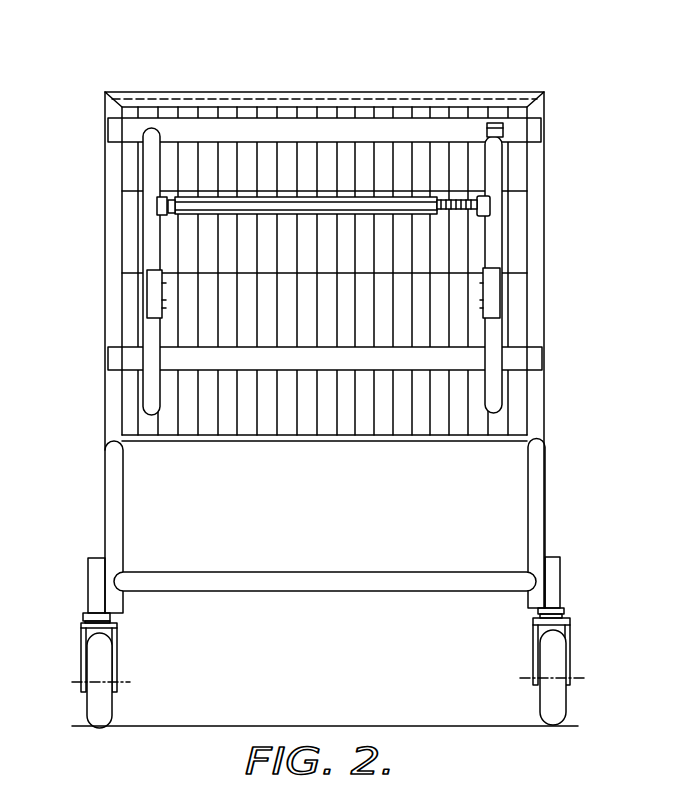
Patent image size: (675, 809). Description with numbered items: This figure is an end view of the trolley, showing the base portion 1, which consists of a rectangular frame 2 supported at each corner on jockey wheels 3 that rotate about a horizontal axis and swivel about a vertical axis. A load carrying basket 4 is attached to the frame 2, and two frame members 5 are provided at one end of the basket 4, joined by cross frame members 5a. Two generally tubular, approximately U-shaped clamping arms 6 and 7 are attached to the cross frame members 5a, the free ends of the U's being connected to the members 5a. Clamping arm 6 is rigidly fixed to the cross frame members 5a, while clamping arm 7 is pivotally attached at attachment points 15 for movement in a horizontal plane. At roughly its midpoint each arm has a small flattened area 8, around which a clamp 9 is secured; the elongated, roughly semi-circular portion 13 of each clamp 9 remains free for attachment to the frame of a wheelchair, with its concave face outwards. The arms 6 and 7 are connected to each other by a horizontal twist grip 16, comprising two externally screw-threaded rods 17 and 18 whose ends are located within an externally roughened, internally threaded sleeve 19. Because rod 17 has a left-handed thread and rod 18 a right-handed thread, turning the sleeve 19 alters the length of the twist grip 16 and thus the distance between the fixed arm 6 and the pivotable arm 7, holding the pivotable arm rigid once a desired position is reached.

The base portion 1 is at (90, 485).
The rectangular frame 2 is at (540, 510).
The jockey wheels 3 is at (548, 650).
The load carrying basket 4 is at (322, 112).
The frame members 5 is at (542, 197).
The cross frame members 5a is at (325, 358).
The clamping arm 6 is at (148, 157).
The clamping arm 7 is at (495, 165).
The flattened area 8 is at (145, 297).
The clamp 9 is at (144, 287).
The elongated portion 13 is at (152, 308).
The attachment points 15 is at (477, 125).
The twist grip 16 is at (356, 197).
The screw-threaded rod 17 is at (457, 203).
The screw-threaded rod 18 is at (168, 198).
The sleeve 19 is at (288, 190).